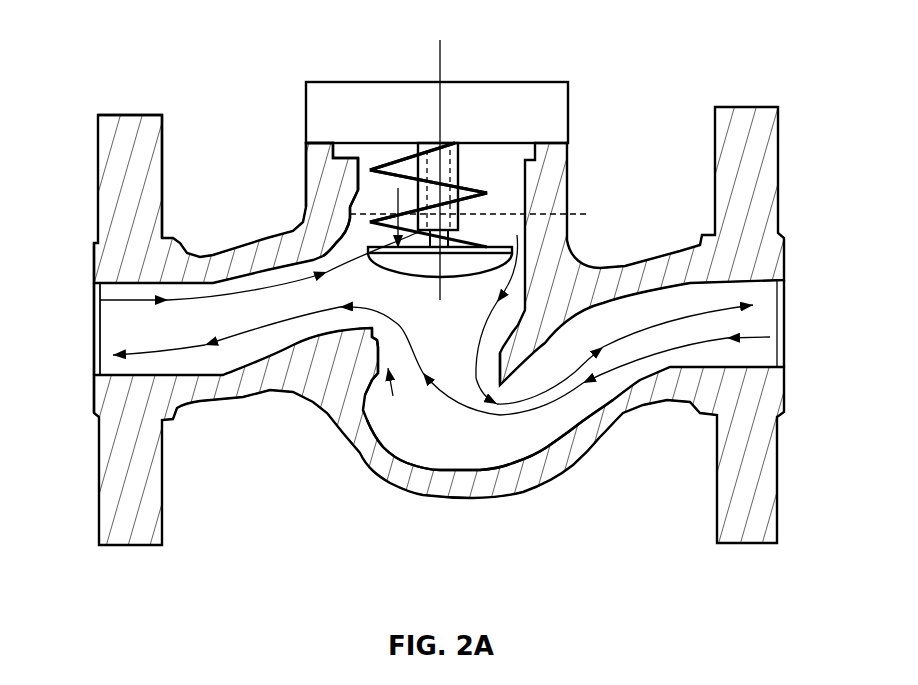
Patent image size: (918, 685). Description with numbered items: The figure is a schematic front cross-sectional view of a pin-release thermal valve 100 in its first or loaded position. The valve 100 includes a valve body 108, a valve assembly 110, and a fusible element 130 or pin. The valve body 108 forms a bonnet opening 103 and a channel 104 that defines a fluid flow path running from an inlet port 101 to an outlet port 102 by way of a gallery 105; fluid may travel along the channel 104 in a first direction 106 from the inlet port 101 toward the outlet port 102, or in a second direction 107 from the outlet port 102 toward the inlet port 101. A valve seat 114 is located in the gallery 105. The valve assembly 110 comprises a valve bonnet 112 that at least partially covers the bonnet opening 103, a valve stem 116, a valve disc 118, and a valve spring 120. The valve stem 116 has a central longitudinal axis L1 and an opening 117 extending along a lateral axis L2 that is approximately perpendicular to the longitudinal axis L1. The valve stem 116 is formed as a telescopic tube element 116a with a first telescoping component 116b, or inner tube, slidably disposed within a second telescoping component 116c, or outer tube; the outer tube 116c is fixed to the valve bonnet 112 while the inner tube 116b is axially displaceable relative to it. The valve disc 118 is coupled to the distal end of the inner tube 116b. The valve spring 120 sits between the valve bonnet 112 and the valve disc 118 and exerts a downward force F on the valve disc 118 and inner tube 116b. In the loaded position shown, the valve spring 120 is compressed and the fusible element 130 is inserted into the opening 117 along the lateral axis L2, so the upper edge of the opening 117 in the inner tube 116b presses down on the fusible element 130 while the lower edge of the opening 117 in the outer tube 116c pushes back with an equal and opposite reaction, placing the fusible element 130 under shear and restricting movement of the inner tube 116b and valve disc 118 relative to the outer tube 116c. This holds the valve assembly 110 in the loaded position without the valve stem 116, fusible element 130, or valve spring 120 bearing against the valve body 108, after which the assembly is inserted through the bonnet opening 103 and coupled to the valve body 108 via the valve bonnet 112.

The thermal valve 100 is at (438, 302).
The inlet port 101 is at (792, 378).
The outlet port 102 is at (88, 393).
The bonnet opening 103 is at (336, 150).
The channel 104 is at (112, 299).
The gallery 105 is at (460, 397).
The first direction 106 is at (748, 342).
The second direction 107 is at (745, 312).
The valve body 108 is at (164, 128).
The valve assembly 110 is at (340, 80).
The valve bonnet 112 is at (432, 148).
The valve seat 114 is at (383, 382).
The valve stem 116 is at (478, 195).
The telescopic tube element 116a is at (487, 205).
The first telescoping component 116b is at (485, 185).
The second telescoping component 116c is at (470, 168).
The opening 117 is at (456, 215).
The valve disc 118 is at (508, 266).
The valve spring 120 is at (385, 158).
The fusible element 130 is at (505, 238).
The central longitudinal axis L1 is at (440, 157).
The lateral axis L2 is at (481, 214).
The force F is at (388, 218).